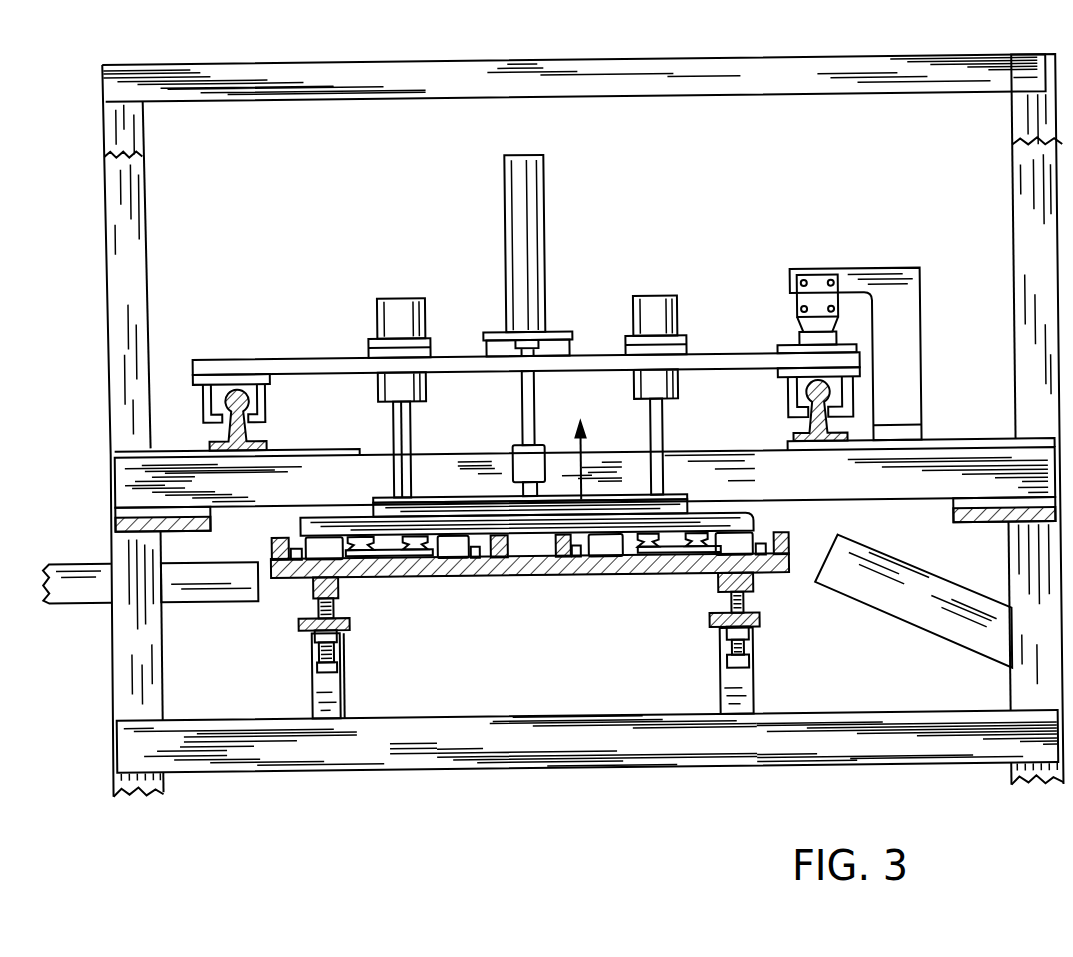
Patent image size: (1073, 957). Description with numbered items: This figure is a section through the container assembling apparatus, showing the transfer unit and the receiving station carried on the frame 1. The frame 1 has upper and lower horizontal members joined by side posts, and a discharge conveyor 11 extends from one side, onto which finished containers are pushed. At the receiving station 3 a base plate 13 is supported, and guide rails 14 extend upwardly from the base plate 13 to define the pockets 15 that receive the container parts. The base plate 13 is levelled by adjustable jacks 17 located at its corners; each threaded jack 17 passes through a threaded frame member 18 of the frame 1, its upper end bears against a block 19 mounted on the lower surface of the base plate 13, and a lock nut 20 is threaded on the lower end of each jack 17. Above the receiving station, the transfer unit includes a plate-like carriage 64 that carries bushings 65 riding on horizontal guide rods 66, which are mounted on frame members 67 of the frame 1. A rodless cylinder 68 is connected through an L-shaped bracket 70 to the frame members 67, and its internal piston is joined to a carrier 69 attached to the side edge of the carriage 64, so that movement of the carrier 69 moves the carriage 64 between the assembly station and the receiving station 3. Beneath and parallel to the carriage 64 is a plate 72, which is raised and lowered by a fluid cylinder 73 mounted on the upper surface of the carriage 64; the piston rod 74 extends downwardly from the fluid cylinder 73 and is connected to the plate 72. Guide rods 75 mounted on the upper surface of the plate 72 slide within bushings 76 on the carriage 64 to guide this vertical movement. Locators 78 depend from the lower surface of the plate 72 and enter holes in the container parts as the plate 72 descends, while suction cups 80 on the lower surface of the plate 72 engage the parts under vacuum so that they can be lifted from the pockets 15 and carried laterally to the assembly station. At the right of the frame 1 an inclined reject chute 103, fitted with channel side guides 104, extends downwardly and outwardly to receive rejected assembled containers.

The frame 1 is at (370, 770).
The receiving station 3 is at (565, 594).
The conveyor 11 is at (62, 560).
The base plate 13 is at (473, 578).
The guide rails 14 is at (271, 546).
The pockets 15 is at (282, 537).
The adjustable jacks 17 is at (316, 656).
The threaded frame member 18 is at (350, 624).
The block 19 is at (337, 583).
The lock nut 20 is at (308, 634).
The carriage 64 is at (295, 356).
The bushings 65 is at (272, 389).
The guide rods 66 is at (249, 400).
The frame members 67 is at (359, 468).
The rodless cylinder 68 is at (824, 284).
The carrier 69 is at (795, 322).
The L-shaped bracket 70 is at (907, 302).
The plate 72 is at (749, 522).
The fluid cylinder 73 is at (530, 227).
The piston rod 74 is at (538, 402).
The guide rods 75 is at (412, 405).
The bushings 76 is at (378, 300).
The locators 78 is at (311, 550).
The suction cups 80 is at (402, 536).
The reject chute 103 is at (955, 653).
The channel side guides 104 is at (901, 600).